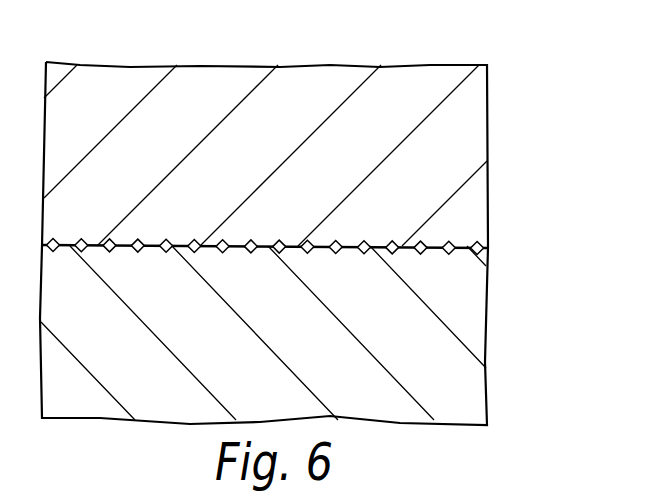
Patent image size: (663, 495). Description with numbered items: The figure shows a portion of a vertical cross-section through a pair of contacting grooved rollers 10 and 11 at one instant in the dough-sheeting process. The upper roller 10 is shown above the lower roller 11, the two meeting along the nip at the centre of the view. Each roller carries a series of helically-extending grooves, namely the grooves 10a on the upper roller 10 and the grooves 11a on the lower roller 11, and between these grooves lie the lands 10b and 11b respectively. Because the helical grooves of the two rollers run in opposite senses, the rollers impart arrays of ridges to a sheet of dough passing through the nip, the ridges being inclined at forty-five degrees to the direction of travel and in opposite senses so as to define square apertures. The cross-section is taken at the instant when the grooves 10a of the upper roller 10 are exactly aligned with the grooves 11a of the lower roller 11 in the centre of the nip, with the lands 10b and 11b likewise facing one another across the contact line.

The grooved roller 10 is at (485, 118).
The grooved roller 11 is at (485, 333).
The helically-extending grooves 10a is at (390, 240).
The lands 10b is at (155, 244).
The helically-extending grooves 11a is at (308, 253).
The lands 11b is at (233, 251).